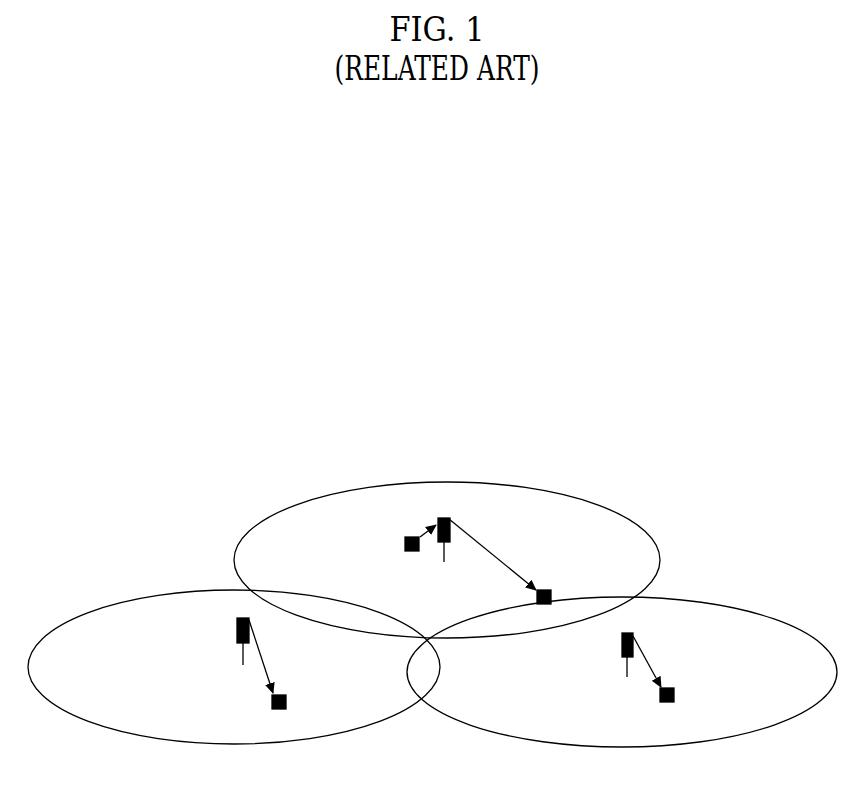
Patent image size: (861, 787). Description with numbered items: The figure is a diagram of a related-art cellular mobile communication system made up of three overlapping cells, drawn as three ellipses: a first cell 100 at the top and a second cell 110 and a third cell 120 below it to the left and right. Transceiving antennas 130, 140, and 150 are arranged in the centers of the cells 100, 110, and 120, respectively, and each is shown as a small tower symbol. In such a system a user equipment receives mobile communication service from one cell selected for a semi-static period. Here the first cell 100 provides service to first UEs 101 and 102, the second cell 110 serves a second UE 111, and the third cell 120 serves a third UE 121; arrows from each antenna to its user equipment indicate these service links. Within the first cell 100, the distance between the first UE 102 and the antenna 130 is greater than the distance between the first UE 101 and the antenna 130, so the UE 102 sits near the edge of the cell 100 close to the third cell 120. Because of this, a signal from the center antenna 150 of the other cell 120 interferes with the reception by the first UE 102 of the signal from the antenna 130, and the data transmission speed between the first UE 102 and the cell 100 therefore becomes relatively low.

The first cell 100 is at (447, 482).
The second cell 110 is at (183, 590).
The third cell 120 is at (695, 598).
The transceiving antenna 130 is at (450, 514).
The transceiving antenna 140 is at (237, 629).
The center antenna 150 is at (622, 643).
The first UE 101 is at (405, 543).
The first UE 102 is at (551, 593).
The second UE 111 is at (288, 698).
The third UE 121 is at (676, 692).